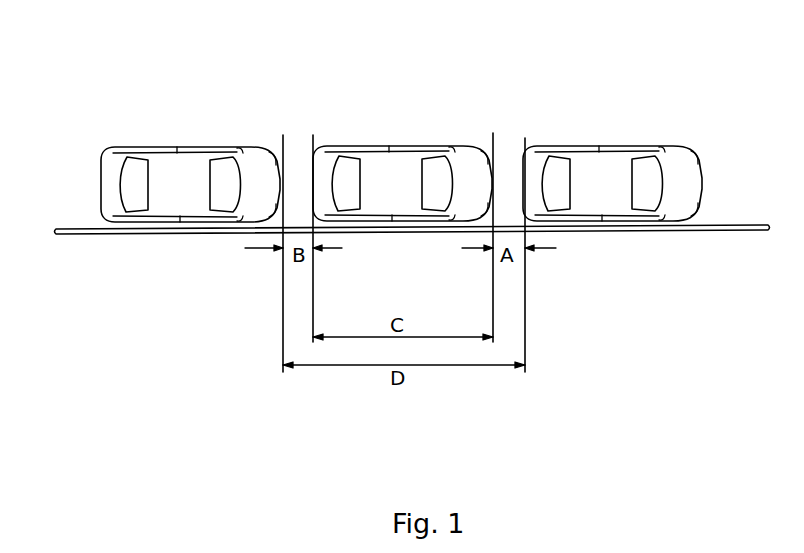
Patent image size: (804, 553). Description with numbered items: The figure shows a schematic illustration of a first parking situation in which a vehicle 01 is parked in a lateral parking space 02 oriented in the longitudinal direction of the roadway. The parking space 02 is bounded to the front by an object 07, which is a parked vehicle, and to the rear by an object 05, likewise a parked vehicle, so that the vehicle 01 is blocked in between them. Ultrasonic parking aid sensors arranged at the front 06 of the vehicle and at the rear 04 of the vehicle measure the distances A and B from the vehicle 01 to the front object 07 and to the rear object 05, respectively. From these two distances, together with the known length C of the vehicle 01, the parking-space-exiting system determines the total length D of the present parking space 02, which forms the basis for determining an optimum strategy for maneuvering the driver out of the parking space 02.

The vehicle 01 is at (378, 177).
The parking space 02 is at (510, 153).
The rear of the vehicle 04 is at (312, 170).
The object bounding the parking space to the rear 05 is at (160, 178).
The front of the vehicle 06 is at (494, 175).
The object bounding the parking space to the front 07 is at (613, 175).